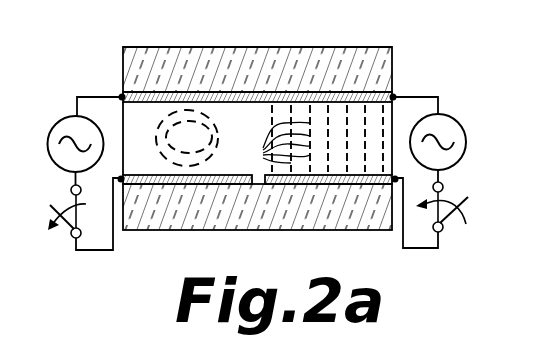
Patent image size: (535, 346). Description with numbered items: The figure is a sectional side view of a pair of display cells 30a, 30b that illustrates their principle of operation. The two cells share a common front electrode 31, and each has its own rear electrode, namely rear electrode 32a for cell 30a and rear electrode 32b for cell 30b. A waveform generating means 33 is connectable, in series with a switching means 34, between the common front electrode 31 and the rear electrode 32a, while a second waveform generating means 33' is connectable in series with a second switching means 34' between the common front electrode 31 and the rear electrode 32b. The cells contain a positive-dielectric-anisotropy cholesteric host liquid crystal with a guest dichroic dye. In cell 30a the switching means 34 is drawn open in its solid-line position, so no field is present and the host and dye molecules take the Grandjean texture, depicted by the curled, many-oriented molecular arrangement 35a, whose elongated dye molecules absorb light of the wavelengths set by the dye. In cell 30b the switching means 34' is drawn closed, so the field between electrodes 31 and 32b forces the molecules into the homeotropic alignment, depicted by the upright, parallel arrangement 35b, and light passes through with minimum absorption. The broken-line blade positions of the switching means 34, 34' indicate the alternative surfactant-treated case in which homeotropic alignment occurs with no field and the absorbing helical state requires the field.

The cell 30a is at (166, 50).
The cell 30b is at (353, 50).
The common front electrode 31 is at (118, 93).
The rear electrode 32a is at (170, 186).
The rear electrode 32b is at (326, 186).
The waveform generating means 33 is at (86, 125).
The waveform generating means 33' is at (449, 135).
The switching means 34 is at (86, 234).
The switching means 34' is at (451, 212).
The liquid crystal region in focal-conic (scattering) state 35a is at (215, 142).
The liquid crystal region in homeotropic (transparent) state 35b is at (263, 153).